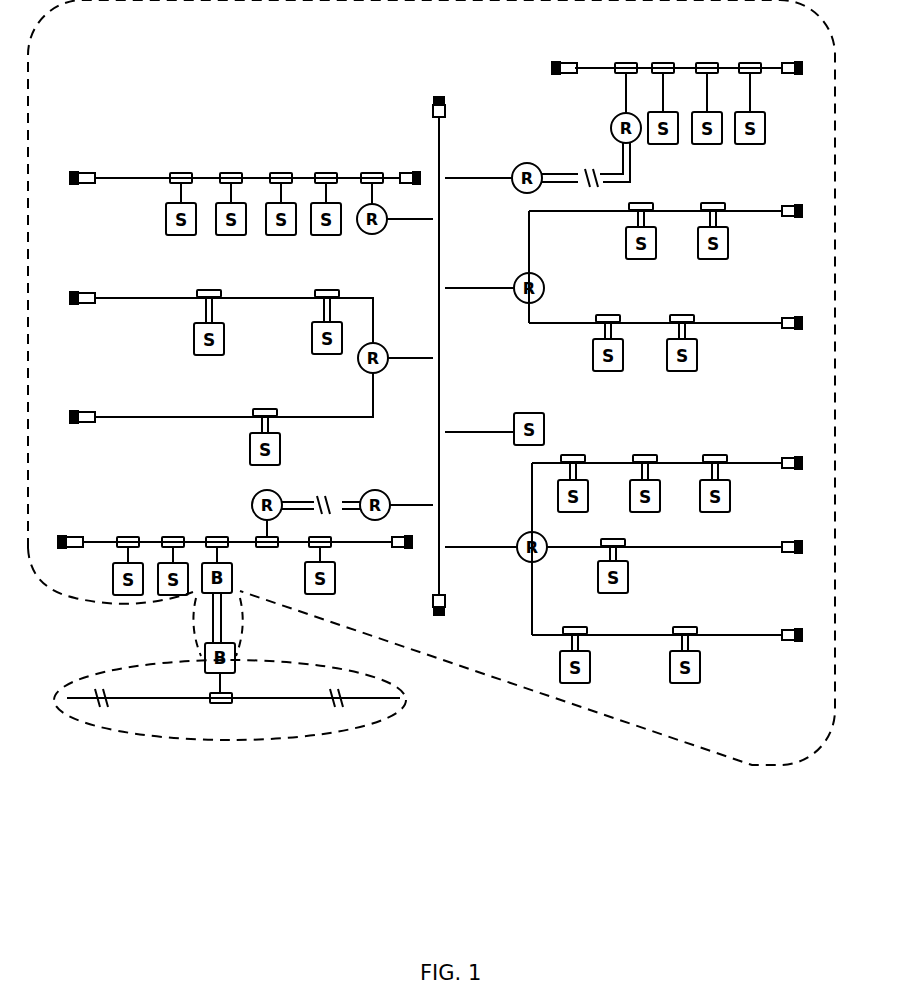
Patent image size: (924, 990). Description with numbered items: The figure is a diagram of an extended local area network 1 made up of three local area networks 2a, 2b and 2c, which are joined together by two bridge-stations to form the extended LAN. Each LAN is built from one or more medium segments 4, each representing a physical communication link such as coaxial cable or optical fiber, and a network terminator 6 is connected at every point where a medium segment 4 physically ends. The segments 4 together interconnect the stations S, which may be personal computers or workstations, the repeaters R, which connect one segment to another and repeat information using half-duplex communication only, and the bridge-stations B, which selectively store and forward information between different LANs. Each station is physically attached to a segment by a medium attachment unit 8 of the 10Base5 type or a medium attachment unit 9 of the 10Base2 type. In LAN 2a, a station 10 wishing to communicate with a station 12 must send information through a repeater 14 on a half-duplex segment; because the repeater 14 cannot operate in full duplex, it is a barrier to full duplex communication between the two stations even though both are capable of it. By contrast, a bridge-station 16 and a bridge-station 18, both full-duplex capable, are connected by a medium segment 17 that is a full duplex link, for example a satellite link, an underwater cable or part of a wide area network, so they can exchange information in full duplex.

The extended local area network 1 is at (481, 825).
The local area network 2a is at (577, 726).
The local area network 2b is at (194, 622).
The local area network 2c is at (240, 741).
The medium segment 4 is at (200, 177).
The network terminator 6 is at (70, 176).
The medium attachment unit 8 is at (128, 536).
The medium attachment unit 9 is at (645, 442).
The station 10 is at (280, 452).
The station 12 is at (310, 335).
The repeater 14 is at (383, 341).
The bridge-station 16 is at (234, 578).
The medium segment 17 is at (227, 628).
The bridge-station 18 is at (236, 659).